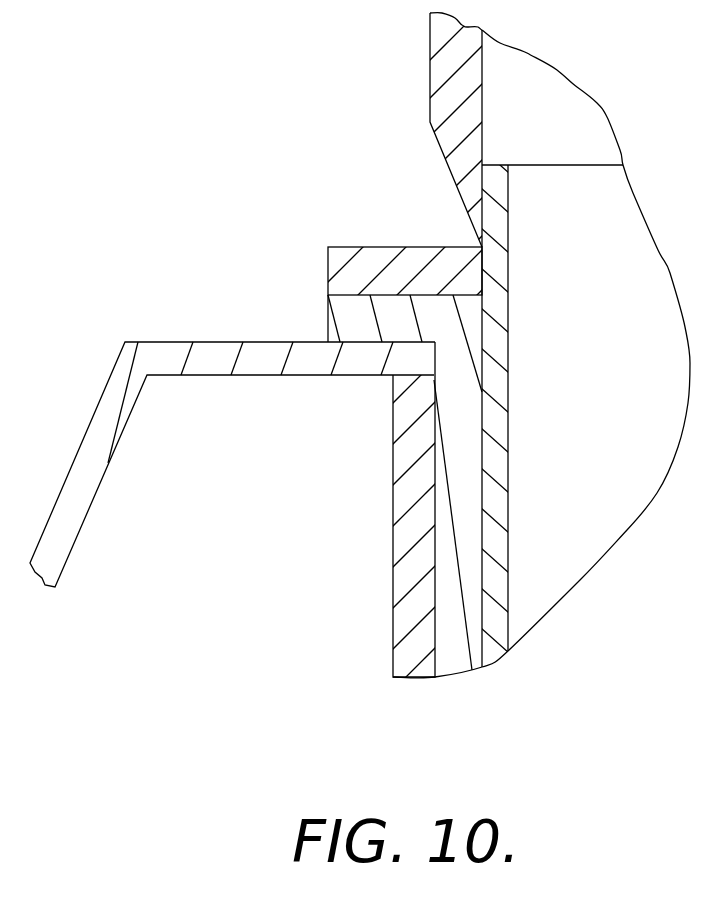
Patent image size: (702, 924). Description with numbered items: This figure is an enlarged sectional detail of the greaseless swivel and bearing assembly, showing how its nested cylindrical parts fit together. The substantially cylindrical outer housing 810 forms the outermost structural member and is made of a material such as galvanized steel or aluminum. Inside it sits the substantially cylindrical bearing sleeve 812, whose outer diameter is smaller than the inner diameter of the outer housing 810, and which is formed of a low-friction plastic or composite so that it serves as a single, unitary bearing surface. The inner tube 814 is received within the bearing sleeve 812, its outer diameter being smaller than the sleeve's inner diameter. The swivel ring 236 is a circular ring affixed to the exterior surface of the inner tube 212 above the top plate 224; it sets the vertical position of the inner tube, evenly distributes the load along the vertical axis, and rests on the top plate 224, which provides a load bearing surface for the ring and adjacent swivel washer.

The cylindrical inner tube 212 is at (555, 85).
The cylindrical inner tube 814 is at (500, 630).
The swivel ring 236 is at (380, 257).
The bearing sleeve 812 is at (332, 317).
The top plate 224 is at (205, 352).
The outer housing 810 is at (407, 622).